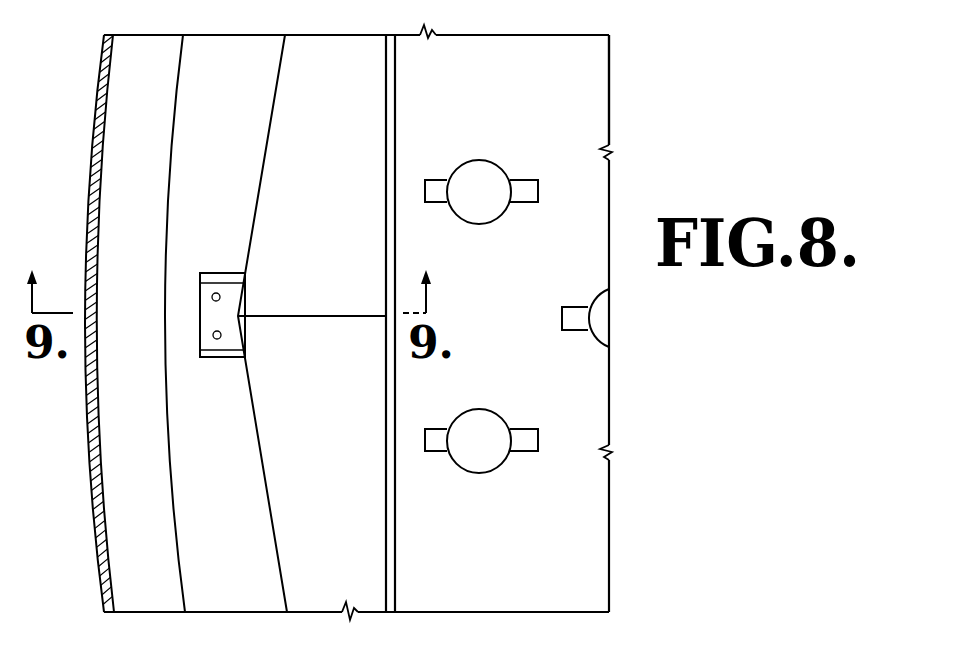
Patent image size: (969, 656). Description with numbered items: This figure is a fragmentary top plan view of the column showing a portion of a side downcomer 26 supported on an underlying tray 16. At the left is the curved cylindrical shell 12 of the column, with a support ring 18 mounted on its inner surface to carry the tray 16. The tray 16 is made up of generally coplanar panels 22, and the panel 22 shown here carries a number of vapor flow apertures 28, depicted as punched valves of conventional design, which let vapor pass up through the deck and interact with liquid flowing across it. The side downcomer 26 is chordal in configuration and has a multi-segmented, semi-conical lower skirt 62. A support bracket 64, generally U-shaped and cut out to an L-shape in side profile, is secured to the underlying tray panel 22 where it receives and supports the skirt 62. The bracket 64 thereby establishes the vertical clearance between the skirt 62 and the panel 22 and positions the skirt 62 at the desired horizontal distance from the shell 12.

The cylindrical shell 12 is at (98, 119).
The fluid-fluid contact tray 16 is at (517, 50).
The support ring 18 is at (158, 40).
The tray panel 22 is at (572, 42).
The side downcomer 26 is at (272, 192).
The vapor flow aperture 28 is at (493, 172).
The downcomer skirt 62 is at (276, 466).
The support bracket 64 is at (229, 352).